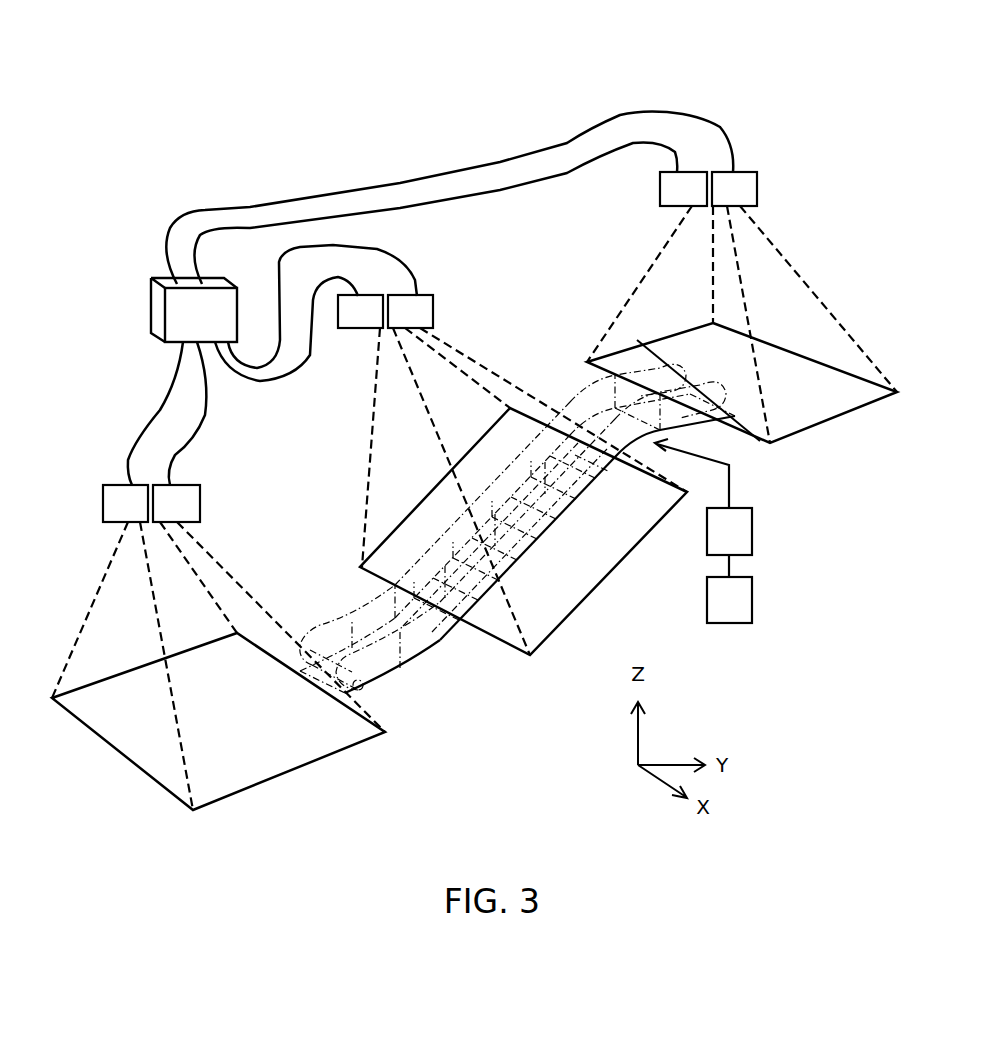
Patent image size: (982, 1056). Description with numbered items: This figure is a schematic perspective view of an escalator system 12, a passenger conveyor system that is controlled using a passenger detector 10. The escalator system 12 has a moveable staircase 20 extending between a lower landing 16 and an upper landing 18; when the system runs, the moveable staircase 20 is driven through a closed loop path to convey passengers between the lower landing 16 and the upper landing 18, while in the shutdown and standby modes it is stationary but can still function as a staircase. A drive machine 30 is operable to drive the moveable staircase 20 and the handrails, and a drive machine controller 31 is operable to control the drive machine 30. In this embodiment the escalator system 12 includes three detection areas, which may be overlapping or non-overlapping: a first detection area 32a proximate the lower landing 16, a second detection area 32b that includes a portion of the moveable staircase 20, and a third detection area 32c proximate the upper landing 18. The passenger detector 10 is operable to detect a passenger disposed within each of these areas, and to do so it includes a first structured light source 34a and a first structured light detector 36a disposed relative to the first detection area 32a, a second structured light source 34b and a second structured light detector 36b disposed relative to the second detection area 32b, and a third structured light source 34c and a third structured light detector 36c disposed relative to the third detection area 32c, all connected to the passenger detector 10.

The passenger detector 10 is at (152, 310).
The escalator system 12 is at (504, 82).
The lower landing 16 is at (297, 626).
The upper landing 18 is at (637, 340).
The moveable staircase 20 is at (450, 633).
The drive machine 30 is at (703, 497).
The drive machine controller 31 is at (729, 589).
The first detection area 32a is at (218, 721).
The second detection area 32b is at (523, 531).
The third detection area 32c is at (742, 383).
The first structured light source 34a is at (122, 647).
The second structured light source 34b is at (360, 431).
The third structured light source 34c is at (647, 267).
The first structured light detector 36a is at (269, 608).
The second structured light detector 36b is at (537, 475).
The third structured light detector 36c is at (804, 307).